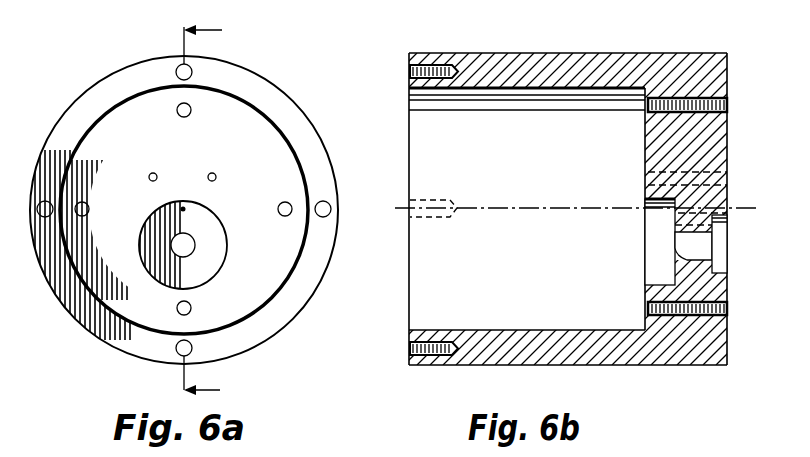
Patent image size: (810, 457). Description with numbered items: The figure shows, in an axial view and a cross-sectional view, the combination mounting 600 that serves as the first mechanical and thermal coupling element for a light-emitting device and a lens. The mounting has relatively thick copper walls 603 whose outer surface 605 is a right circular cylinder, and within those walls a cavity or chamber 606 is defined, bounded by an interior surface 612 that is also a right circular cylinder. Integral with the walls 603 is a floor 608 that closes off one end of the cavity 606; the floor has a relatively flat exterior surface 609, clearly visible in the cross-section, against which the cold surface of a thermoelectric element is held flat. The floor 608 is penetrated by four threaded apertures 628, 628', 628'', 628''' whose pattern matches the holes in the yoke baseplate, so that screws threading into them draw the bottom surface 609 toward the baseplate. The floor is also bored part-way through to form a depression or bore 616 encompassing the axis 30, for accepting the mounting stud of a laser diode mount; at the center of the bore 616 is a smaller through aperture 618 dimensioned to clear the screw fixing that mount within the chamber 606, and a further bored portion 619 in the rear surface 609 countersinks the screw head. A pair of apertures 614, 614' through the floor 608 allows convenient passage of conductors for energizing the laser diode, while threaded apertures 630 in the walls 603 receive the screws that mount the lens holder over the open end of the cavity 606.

In FIG. 6a, the combination mounting 600 is at (192, 214).
In FIG. 6b, the combination mounting 600 is at (457, 219).
In FIG. 6a, the copper walls 603 is at (282, 332).
In FIG. 6a, the circularly cylindrical outer surface 605 is at (97, 338).
In FIG. 6b, the circularly cylindrical outer surface 605 is at (580, 55).
In FIG. 6b, the cavity 606 is at (432, 312).
In FIG. 6b, the floor 608 is at (645, 157).
In FIG. 6b, the exterior surface 609 is at (727, 348).
In FIG. 6b, the interior surface 612 is at (420, 127).
In FIG. 6a, the aperture 614 is at (147, 159).
In FIG. 6b, the aperture 614 is at (657, 195).
In FIG. 6a, the aperture 614' is at (197, 159).
In FIG. 6a, the bore 616 is at (210, 270).
In FIG. 6b, the bore 616 is at (672, 280).
In FIG. 6a, the through aperture 618 is at (192, 248).
In FIG. 6b, the through aperture 618 is at (675, 243).
In FIG. 6b, the bored portion 619 is at (720, 262).
In FIG. 6a, the threaded aperture 628 is at (208, 119).
In FIG. 6b, the threaded aperture 628 is at (657, 118).
In FIG. 6a, the threaded aperture 628' is at (211, 304).
In FIG. 6a, the threaded aperture 628'' is at (99, 187).
In FIG. 6b, the threaded aperture 628'' is at (662, 311).
In FIG. 6a, the threaded aperture 628''' is at (267, 186).
In FIG. 6a, the aperture 630 is at (181, 63).
In FIG. 6b, the aperture 630 is at (409, 70).
In FIG. 6a, the axis 30 is at (186, 209).
In FIG. 6b, the axis 30 is at (748, 208).